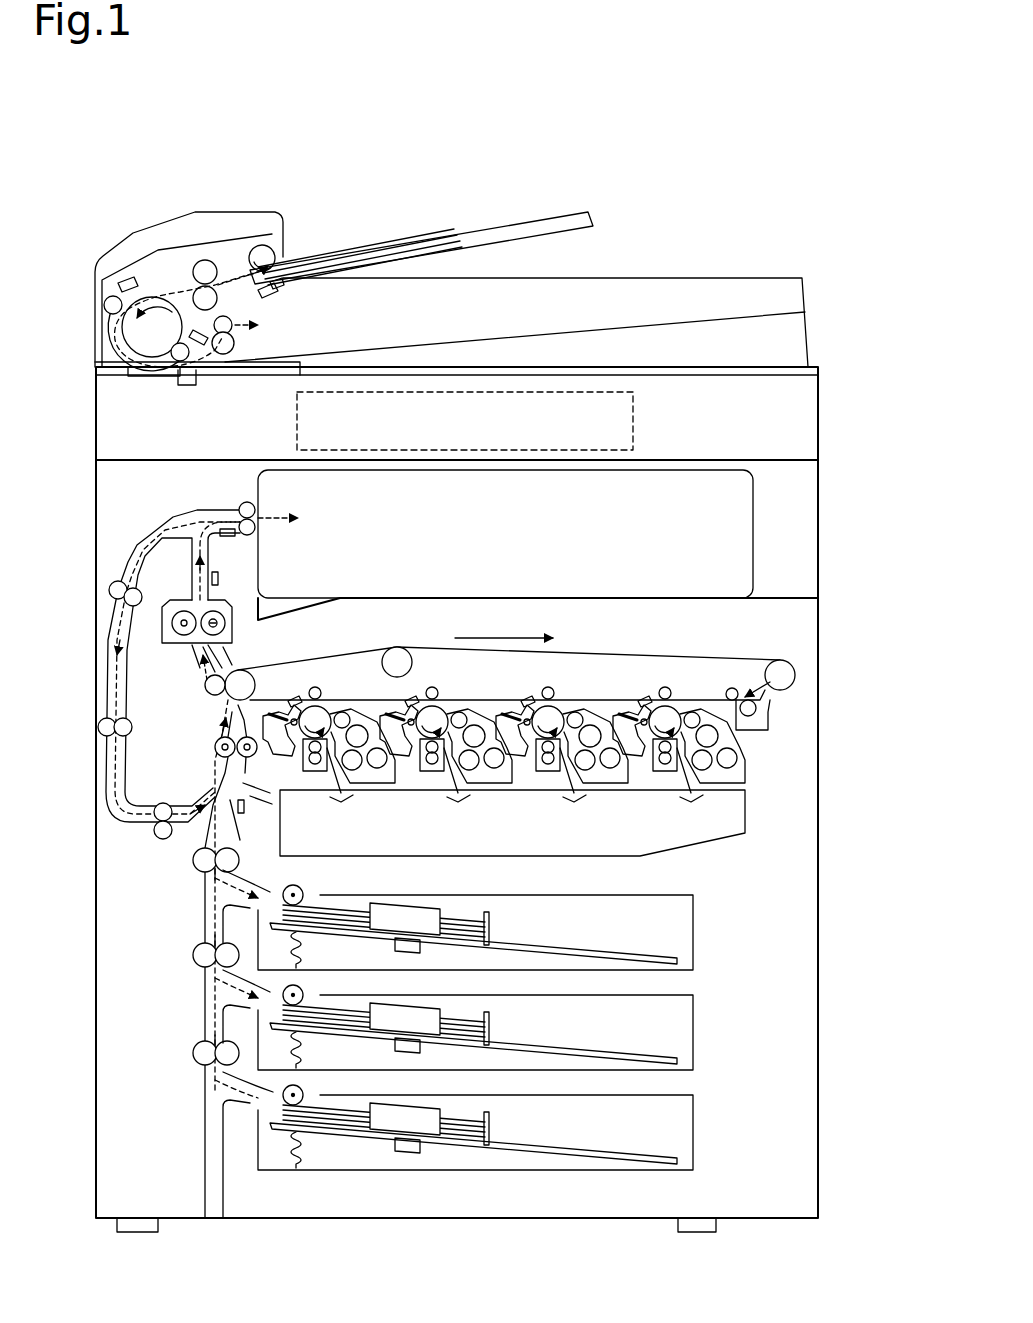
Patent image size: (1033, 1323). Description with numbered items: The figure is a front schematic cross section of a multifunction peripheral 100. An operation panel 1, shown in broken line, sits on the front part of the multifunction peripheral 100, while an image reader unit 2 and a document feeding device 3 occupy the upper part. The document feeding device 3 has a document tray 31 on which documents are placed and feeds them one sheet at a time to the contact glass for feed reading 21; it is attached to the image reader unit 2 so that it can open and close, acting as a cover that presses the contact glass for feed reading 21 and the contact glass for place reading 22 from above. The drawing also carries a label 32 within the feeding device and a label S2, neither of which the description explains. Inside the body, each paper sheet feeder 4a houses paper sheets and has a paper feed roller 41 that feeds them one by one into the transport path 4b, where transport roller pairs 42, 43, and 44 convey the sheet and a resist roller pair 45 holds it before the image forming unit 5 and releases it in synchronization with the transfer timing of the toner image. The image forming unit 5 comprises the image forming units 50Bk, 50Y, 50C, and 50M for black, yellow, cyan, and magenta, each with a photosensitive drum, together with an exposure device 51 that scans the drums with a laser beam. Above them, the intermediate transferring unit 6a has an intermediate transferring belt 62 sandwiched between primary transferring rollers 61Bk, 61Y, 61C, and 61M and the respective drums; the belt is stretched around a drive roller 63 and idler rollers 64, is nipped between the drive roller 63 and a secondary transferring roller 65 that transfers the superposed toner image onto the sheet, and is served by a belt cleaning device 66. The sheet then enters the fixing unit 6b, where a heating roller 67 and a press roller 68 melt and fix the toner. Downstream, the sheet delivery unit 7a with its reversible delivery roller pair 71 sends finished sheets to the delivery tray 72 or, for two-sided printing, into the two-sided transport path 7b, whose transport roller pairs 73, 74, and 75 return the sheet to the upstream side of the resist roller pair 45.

The multifunction peripheral 100 is at (812, 255).
The operation panel 1 is at (636, 411).
The image reader unit 2 is at (820, 400).
The document feeding device 3 is at (288, 218).
The document tray 31 is at (560, 240).
The document conveying path 32 is at (178, 285).
The document sensor S2 is at (127, 283).
The contact glass for feed reading 21 is at (132, 372).
The contact glass for place reading 22 is at (343, 370).
The sheet delivery unit 7a is at (216, 506).
The two-sided transport path 7b is at (128, 573).
The delivery roller pair 71 is at (255, 508).
The delivery tray 72 is at (452, 597).
The transport roller pair for two-sided printing 73 is at (108, 590).
The transport roller pair for two-sided printing 74 is at (98, 727).
The transport roller pair for two-sided printing 75 is at (154, 826).
The fixing unit 6b is at (158, 632).
The heating roller 67 is at (222, 624).
The press roller 68 is at (172, 626).
The intermediate transferring unit 6a is at (566, 666).
The intermediate transferring belt 62 is at (625, 650).
The drive roller 63 is at (255, 686).
The idler roller 64 is at (397, 648).
The secondary transferring roller 65 is at (205, 686).
The belt cleaning device 66 is at (764, 708).
The primary transferring roller 61Bk is at (318, 690).
The primary transferring roller 61Y is at (437, 690).
The primary transferring roller 61C is at (553, 690).
The primary transferring roller 61M is at (670, 690).
The image forming unit 5 is at (574, 776).
The image forming unit for black 50Bk is at (313, 773).
The image forming unit for yellow 50Y is at (430, 773).
The image forming unit for cyan 50C is at (546, 773).
The image forming unit for magenta 50M is at (663, 773).
The exposure device 51 is at (722, 825).
The transport path 4b is at (200, 893).
The resist roller pair 45 is at (214, 748).
The transport roller pair 42 is at (192, 860).
The transport roller pair 43 is at (192, 955).
The transport roller pair 44 is at (192, 1053).
The paper sheet feeder 4a is at (697, 1105).
The paper feed roller 41 is at (303, 892).